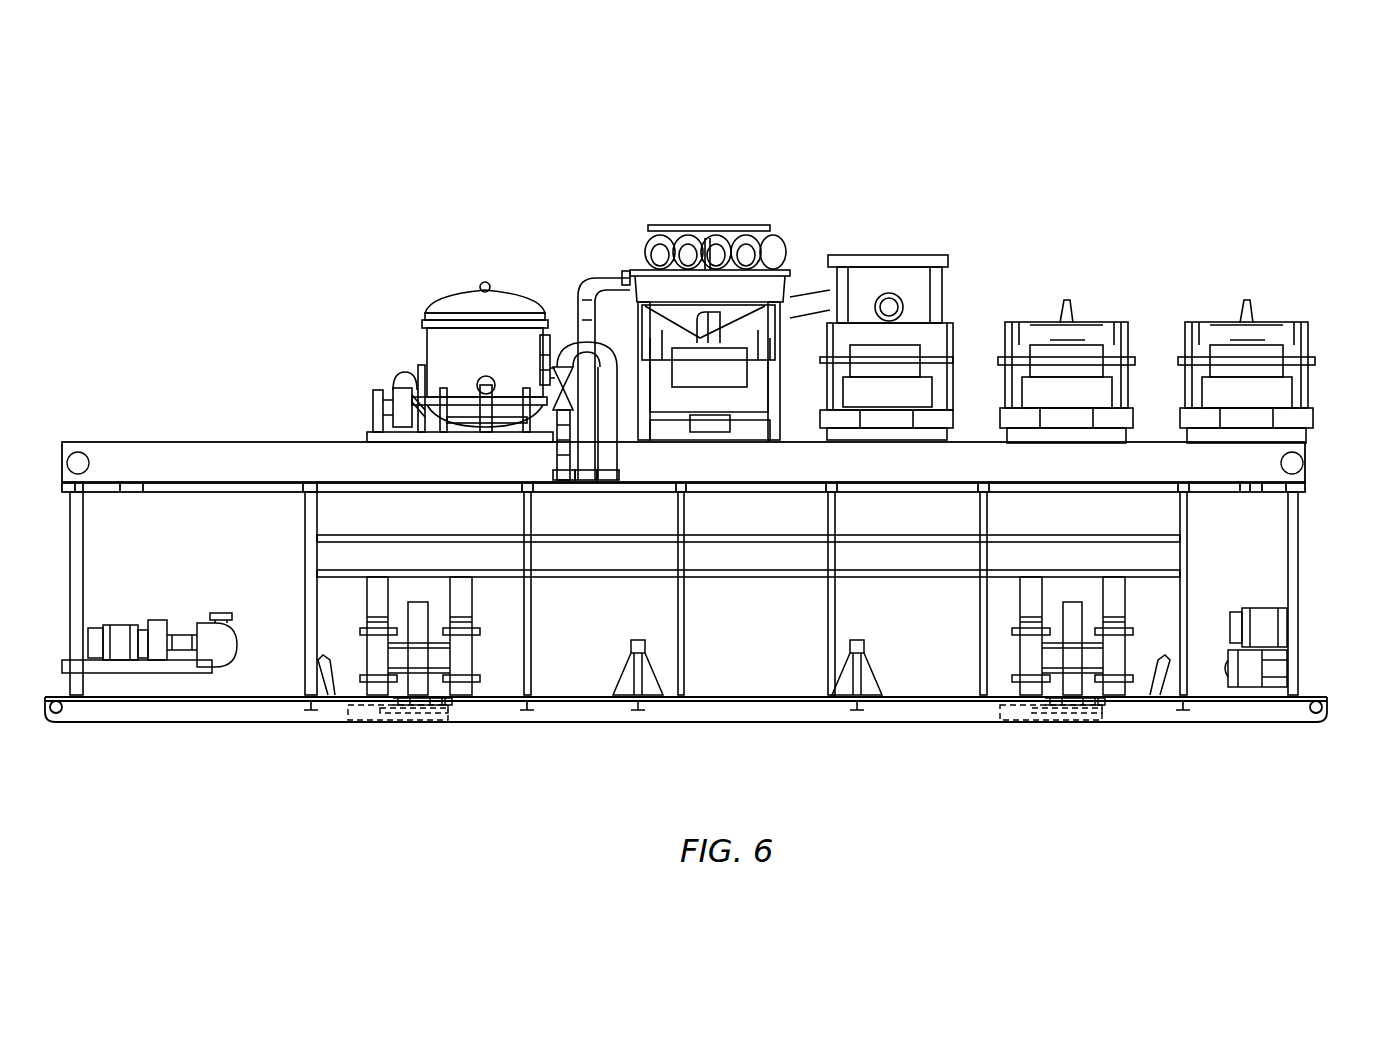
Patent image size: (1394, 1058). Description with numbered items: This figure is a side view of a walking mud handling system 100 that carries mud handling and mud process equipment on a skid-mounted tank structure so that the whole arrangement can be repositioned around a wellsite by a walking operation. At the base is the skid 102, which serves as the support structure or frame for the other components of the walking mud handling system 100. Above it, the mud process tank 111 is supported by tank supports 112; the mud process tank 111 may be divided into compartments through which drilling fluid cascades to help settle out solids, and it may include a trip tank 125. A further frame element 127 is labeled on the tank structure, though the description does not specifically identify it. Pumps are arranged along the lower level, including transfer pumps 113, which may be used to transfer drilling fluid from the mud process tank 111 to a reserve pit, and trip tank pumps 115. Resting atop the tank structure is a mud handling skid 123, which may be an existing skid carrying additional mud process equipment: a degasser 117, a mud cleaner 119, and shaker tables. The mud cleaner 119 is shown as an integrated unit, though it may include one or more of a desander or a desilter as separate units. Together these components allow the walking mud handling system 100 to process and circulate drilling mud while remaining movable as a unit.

The walking mud handling system 100 is at (120, 190).
The skid 102 is at (583, 722).
The mud process tank 111 is at (790, 673).
The tank supports 112 is at (878, 680).
The transfer pumps 113 is at (212, 673).
The trip tank pumps 115 is at (1241, 687).
The degasser 117 is at (448, 295).
The mud cleaner 119 is at (668, 228).
The mud handling skid 123 is at (1275, 452).
The trip tank 125 is at (1150, 535).
The upper rail 127 is at (353, 535).